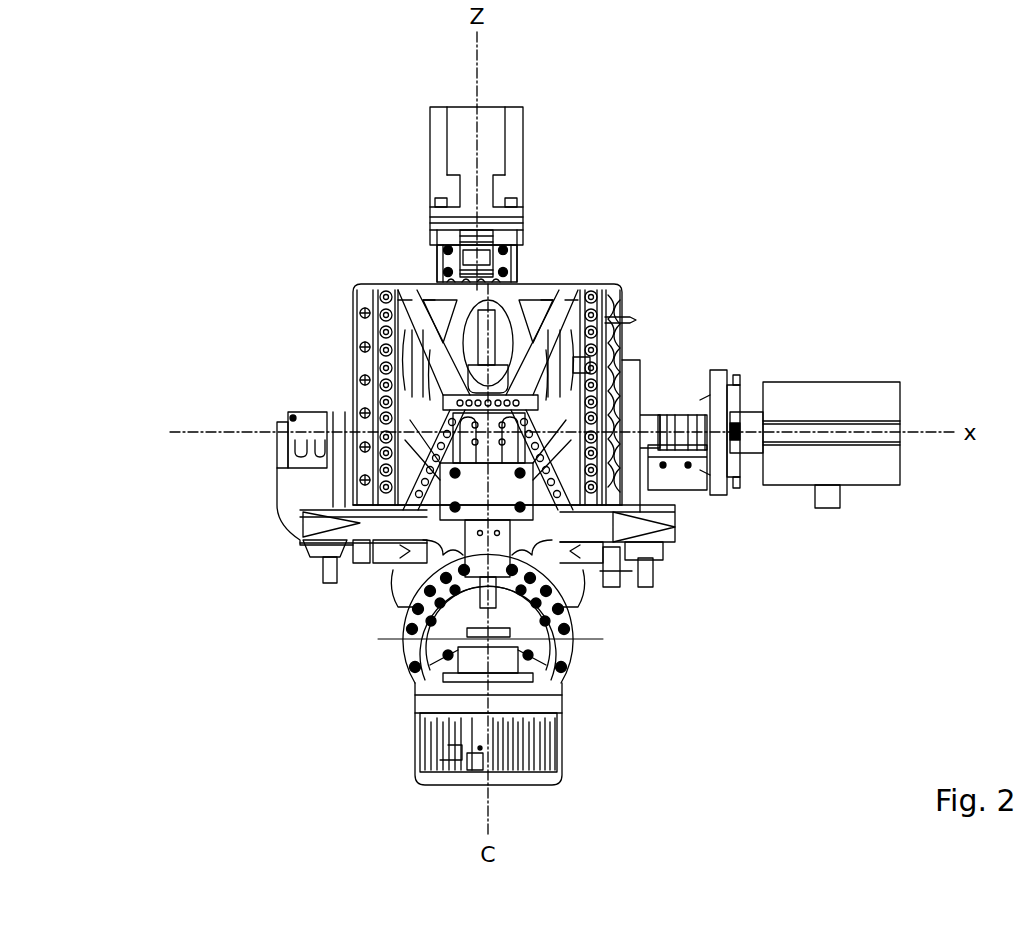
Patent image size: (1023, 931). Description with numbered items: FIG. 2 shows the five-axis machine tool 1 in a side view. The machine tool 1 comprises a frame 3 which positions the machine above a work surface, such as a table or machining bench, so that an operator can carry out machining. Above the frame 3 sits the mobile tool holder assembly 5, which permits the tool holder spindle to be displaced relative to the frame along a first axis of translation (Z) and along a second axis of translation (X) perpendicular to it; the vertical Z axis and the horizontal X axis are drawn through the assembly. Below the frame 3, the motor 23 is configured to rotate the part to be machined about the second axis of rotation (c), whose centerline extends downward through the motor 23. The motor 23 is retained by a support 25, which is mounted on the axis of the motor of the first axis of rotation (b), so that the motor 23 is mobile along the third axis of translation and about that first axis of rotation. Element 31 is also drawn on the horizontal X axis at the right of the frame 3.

The machine tool 1 is at (178, 686).
The frame 3 is at (666, 533).
The mobile tool holder assembly 5 is at (541, 302).
The motor 23 is at (565, 752).
The support 25 is at (565, 628).
The drive motor 31 is at (797, 396).